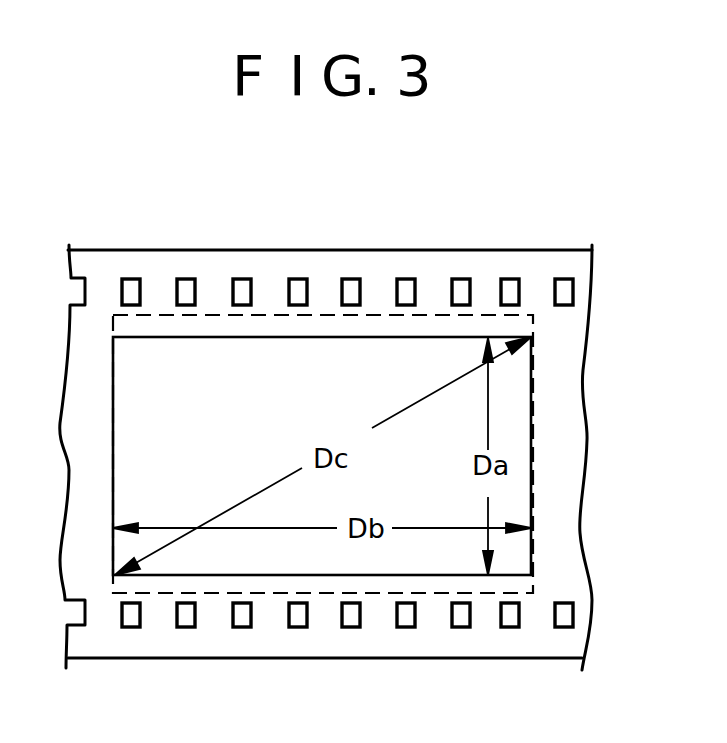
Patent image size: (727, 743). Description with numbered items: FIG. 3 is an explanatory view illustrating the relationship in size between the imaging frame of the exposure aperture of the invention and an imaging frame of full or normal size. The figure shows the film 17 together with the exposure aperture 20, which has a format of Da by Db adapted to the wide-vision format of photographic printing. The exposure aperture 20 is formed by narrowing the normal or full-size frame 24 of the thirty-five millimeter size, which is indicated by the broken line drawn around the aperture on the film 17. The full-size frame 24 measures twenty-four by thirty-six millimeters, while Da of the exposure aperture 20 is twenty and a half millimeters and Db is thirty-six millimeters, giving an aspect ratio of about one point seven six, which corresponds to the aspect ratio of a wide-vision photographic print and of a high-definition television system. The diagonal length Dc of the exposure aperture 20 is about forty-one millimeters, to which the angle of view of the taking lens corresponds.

The film 17 is at (195, 658).
The exposure aperture 20 is at (325, 337).
The full-size frame 24 is at (327, 593).